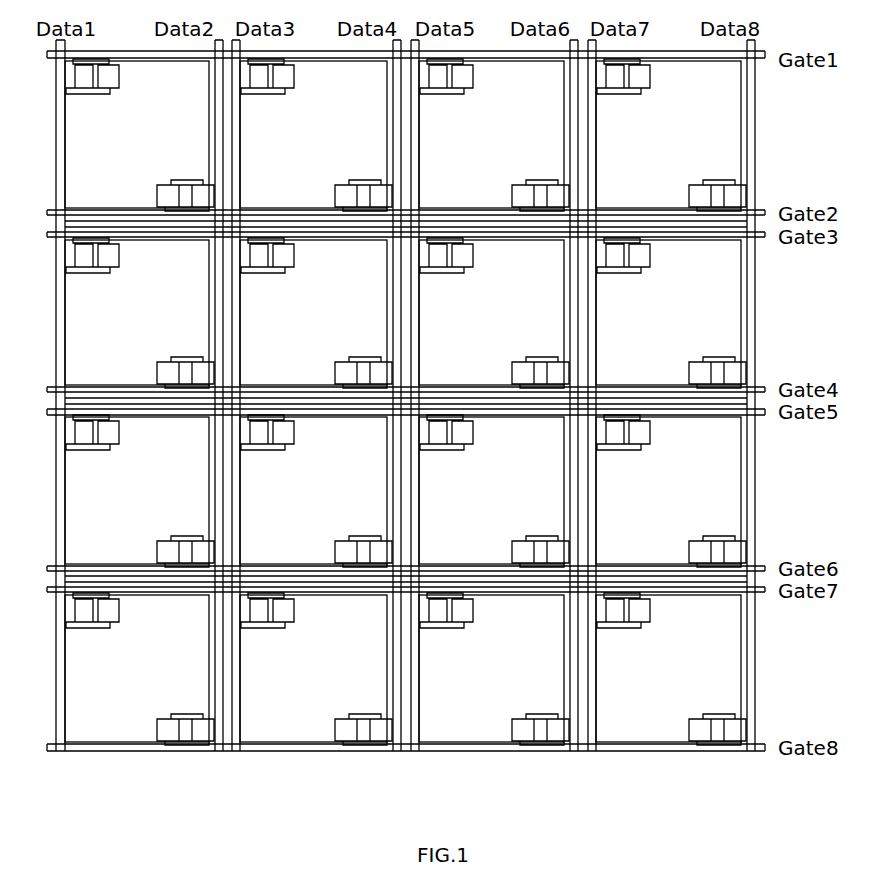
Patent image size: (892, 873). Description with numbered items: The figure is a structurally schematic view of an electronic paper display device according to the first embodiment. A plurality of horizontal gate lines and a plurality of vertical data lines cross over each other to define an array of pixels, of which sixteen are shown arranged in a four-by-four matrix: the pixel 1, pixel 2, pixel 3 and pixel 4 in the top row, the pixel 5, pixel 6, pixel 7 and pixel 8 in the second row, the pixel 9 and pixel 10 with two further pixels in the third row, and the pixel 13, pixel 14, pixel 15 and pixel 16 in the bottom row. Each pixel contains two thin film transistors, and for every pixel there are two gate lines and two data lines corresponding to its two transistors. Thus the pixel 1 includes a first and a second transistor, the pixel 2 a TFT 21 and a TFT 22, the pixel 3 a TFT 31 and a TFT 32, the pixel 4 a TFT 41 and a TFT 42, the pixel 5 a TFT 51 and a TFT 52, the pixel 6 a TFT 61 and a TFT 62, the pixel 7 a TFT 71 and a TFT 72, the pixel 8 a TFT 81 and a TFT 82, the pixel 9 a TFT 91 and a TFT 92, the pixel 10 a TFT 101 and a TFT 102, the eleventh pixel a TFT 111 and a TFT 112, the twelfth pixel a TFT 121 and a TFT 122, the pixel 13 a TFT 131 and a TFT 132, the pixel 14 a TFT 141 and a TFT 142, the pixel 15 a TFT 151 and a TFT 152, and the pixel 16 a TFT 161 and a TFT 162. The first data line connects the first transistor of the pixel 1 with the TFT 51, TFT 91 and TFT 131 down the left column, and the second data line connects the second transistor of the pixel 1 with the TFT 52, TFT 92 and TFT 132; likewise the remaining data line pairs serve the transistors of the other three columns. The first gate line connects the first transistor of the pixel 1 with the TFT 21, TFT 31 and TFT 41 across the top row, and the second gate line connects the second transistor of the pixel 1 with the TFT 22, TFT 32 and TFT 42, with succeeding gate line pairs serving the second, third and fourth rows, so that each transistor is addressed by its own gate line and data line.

The pixel 1 is at (137, 134).
The pixel 2 is at (313, 134).
The pixel 3 is at (491, 134).
The pixel 4 is at (668, 134).
The pixel 5 is at (137, 312).
The pixel 6 is at (313, 312).
The pixel 7 is at (491, 312).
The pixel 8 is at (668, 312).
The pixel 9 is at (137, 490).
The pixel 10 is at (313, 490).
The pixel 13 is at (137, 668).
The pixel 14 is at (313, 668).
The pixel 15 is at (491, 668).
The pixel 16 is at (668, 668).
The TFT 21 is at (267, 88).
The TFT 22 is at (363, 184).
The TFT 31 is at (446, 88).
The TFT 32 is at (540, 184).
The TFT 41 is at (623, 88).
The TFT 42 is at (717, 184).
The TFT 51 is at (92, 267).
The TFT 52 is at (185, 361).
The TFT 61 is at (267, 267).
The TFT 62 is at (363, 361).
The TFT 71 is at (446, 267).
The TFT 72 is at (540, 361).
The TFT 81 is at (623, 267).
The TFT 82 is at (717, 361).
The TFT 91 is at (92, 444).
The TFT 92 is at (185, 540).
The TFT 101 is at (267, 444).
The TFT 102 is at (363, 540).
The TFT 111 is at (446, 444).
The TFT 112 is at (540, 540).
The TFT 121 is at (623, 444).
The TFT 122 is at (717, 540).
The TFT 131 is at (92, 622).
The TFT 132 is at (185, 718).
The TFT 141 is at (267, 622).
The TFT 142 is at (363, 718).
The TFT 151 is at (446, 622).
The TFT 152 is at (540, 718).
The TFT 161 is at (623, 622).
The TFT 162 is at (717, 718).